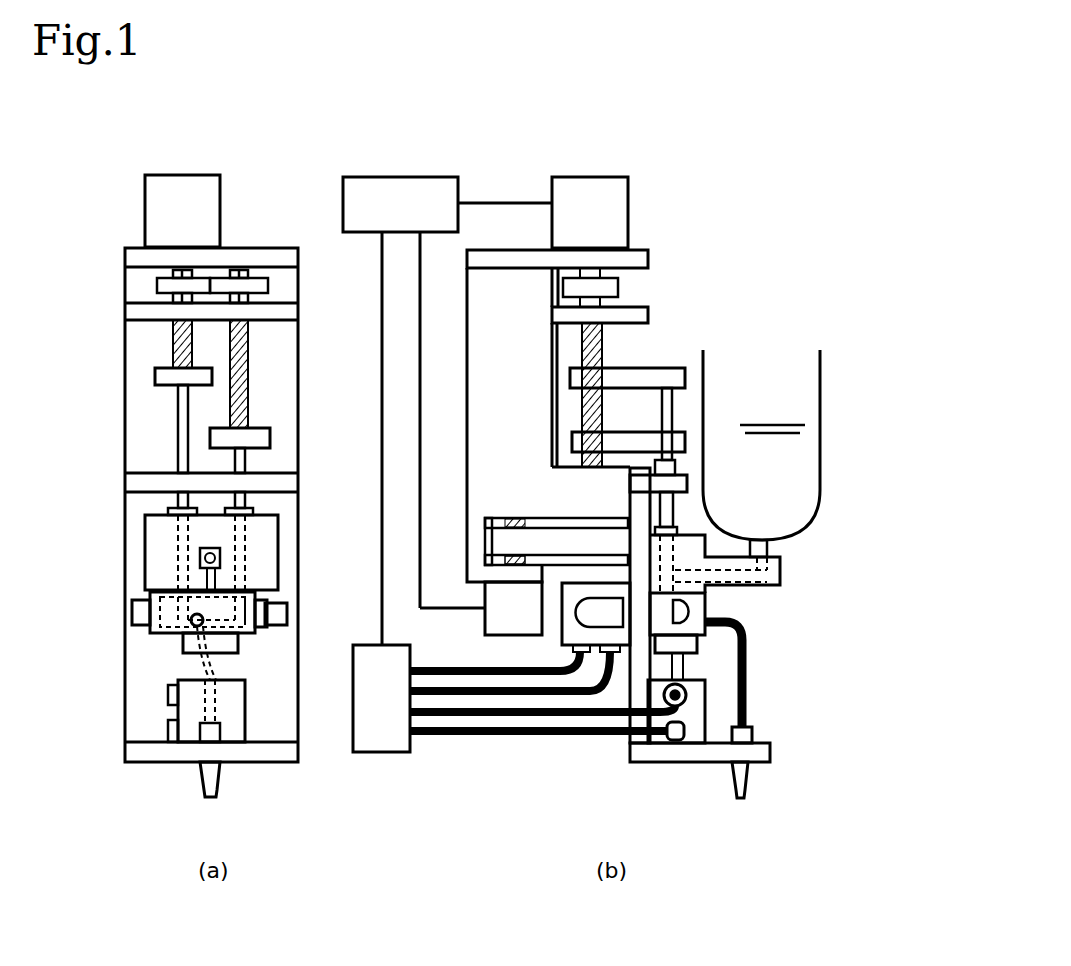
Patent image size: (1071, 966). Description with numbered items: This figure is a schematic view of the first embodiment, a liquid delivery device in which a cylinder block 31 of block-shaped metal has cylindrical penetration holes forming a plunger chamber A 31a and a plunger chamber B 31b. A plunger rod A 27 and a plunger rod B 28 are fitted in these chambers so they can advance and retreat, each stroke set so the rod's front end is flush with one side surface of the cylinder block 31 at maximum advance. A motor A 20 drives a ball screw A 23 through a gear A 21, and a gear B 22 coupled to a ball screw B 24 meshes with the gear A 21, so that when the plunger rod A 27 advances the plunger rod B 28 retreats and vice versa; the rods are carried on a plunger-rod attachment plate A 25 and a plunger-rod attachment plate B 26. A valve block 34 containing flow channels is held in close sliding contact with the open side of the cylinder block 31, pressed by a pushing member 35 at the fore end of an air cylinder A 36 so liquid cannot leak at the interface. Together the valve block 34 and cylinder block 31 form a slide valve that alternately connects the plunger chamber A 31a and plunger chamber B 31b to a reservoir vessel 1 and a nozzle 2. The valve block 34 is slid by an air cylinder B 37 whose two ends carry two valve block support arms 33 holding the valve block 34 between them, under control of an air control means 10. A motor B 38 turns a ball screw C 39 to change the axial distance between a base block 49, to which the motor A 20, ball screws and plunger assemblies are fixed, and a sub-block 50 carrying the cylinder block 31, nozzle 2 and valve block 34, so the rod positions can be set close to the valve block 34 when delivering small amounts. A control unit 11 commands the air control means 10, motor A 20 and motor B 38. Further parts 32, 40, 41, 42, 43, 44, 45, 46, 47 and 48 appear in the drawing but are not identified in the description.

The reservoir vessel 1 is at (824, 433).
The nozzle 2 is at (752, 782).
The air control means 10 is at (378, 753).
The control unit 11 is at (409, 175).
The motor A 20 is at (207, 173).
The gear A 21 is at (156, 287).
The gear B 22 is at (270, 286).
The ball screw A 23 is at (172, 342).
The ball screw B 24 is at (249, 347).
The plunger-rod attachment plate A 25 is at (155, 378).
The plunger-rod attachment plate B 26 is at (271, 438).
The plunger rod A 27 is at (178, 437).
The plunger rod B 28 is at (246, 458).
The cylinder block 31 is at (280, 570).
The plunger chamber A 31a is at (172, 551).
The plunger chamber B 31b is at (247, 541).
The inlet port 32 is at (222, 558).
The valve block support arms 33 is at (132, 612).
The valve block 34 is at (150, 636).
The pushing member 35 is at (239, 645).
The air cylinder A 36 is at (247, 713).
The air cylinder B 37 is at (596, 614).
The motor B 38 is at (484, 622).
The ball screw C 39 is at (527, 560).
The tube 40 is at (752, 650).
The connector 41 is at (572, 648).
The connector 42 is at (611, 654).
The tube 43 is at (470, 666).
The tube 44 is at (436, 686).
The sensor 45 is at (170, 698).
The sensor 46 is at (170, 734).
The cable 47 is at (568, 718).
The cable 48 is at (525, 736).
The base block 49 is at (522, 392).
The sub-block 50 is at (628, 555).